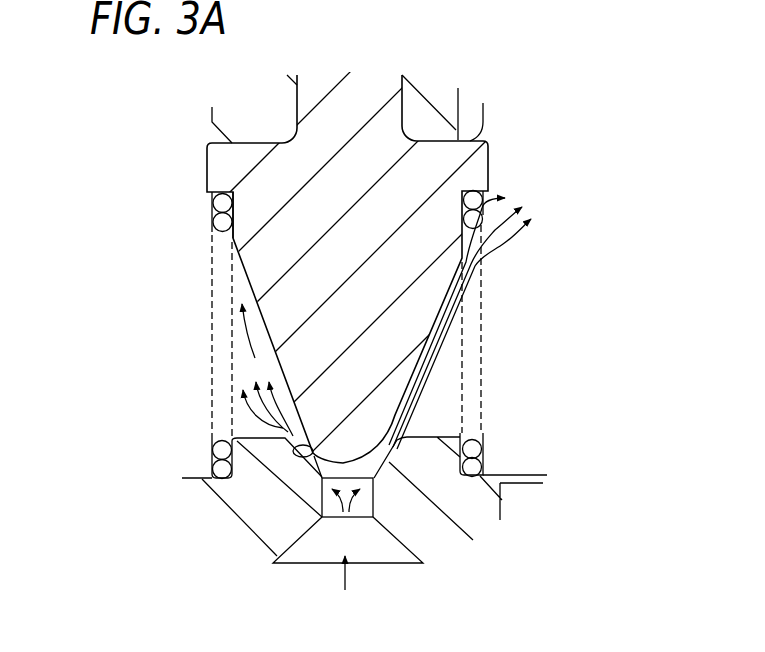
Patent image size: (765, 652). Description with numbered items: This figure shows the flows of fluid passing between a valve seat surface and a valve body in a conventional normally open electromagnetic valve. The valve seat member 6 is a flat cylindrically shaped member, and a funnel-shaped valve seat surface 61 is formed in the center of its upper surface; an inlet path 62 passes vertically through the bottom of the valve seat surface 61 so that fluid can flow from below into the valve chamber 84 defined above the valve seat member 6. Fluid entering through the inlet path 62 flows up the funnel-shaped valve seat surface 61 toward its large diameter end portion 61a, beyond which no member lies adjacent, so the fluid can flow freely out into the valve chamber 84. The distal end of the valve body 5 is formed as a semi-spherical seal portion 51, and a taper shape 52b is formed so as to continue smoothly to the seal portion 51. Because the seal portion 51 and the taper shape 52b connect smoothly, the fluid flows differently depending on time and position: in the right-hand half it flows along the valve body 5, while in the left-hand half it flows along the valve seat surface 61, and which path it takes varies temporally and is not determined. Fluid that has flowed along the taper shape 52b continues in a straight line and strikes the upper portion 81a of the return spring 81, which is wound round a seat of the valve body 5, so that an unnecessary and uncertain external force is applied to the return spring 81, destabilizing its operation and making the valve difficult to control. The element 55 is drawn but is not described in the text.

The valve body 5 is at (497, 152).
The valve stem 55 is at (388, 111).
The valve seat member 6 is at (494, 470).
The seal portion 51 is at (388, 463).
The taper shape 52b is at (268, 363).
The valve seat surface 61 is at (300, 455).
The large diameter end portion 61a is at (298, 446).
The inlet path 62 is at (398, 553).
The return spring 81 is at (483, 343).
The upper portion of return spring 81a is at (483, 219).
The valve chamber 84 is at (196, 305).